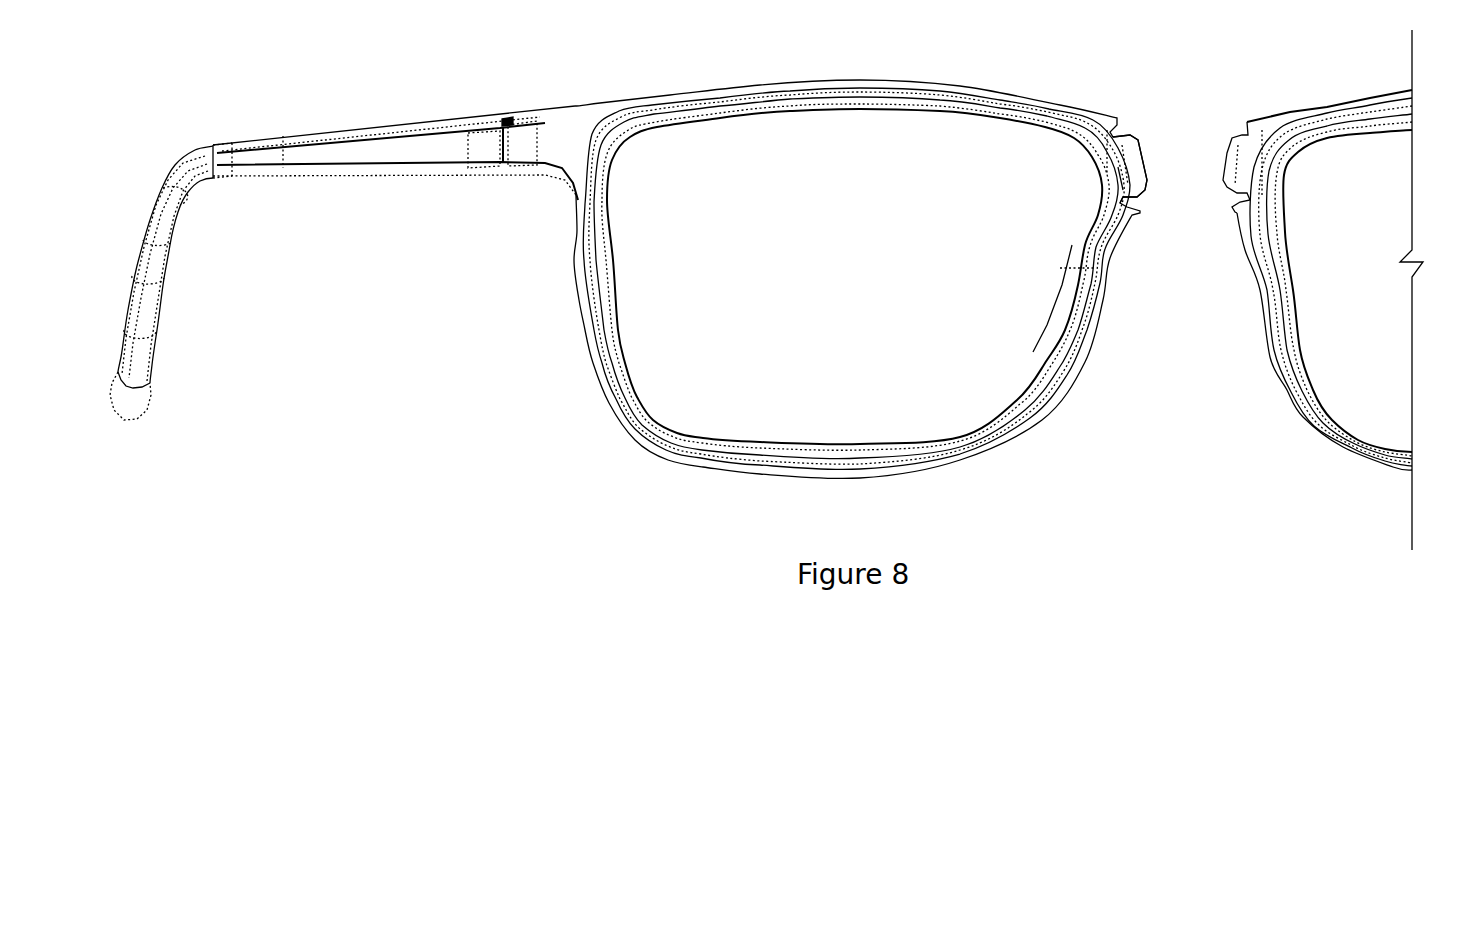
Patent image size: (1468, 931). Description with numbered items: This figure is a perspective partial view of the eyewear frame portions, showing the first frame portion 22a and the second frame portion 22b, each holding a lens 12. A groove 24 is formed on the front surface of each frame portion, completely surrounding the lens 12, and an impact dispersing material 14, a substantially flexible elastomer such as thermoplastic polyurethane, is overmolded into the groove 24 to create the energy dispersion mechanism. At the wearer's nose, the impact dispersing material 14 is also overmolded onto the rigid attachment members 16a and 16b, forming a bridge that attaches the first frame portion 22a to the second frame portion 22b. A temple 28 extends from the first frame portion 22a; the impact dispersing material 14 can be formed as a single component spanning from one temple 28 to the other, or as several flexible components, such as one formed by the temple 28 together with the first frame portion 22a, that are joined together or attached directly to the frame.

The lens 12 is at (703, 377).
The impact dispersing material 14 is at (582, 143).
The rigid attachment member 16a is at (1137, 140).
The rigid attachment member 16b is at (1230, 140).
The first frame portion 22a is at (602, 335).
The second frame portion 22b is at (1277, 353).
The groove 24 is at (1278, 145).
The temple 28 is at (523, 145).